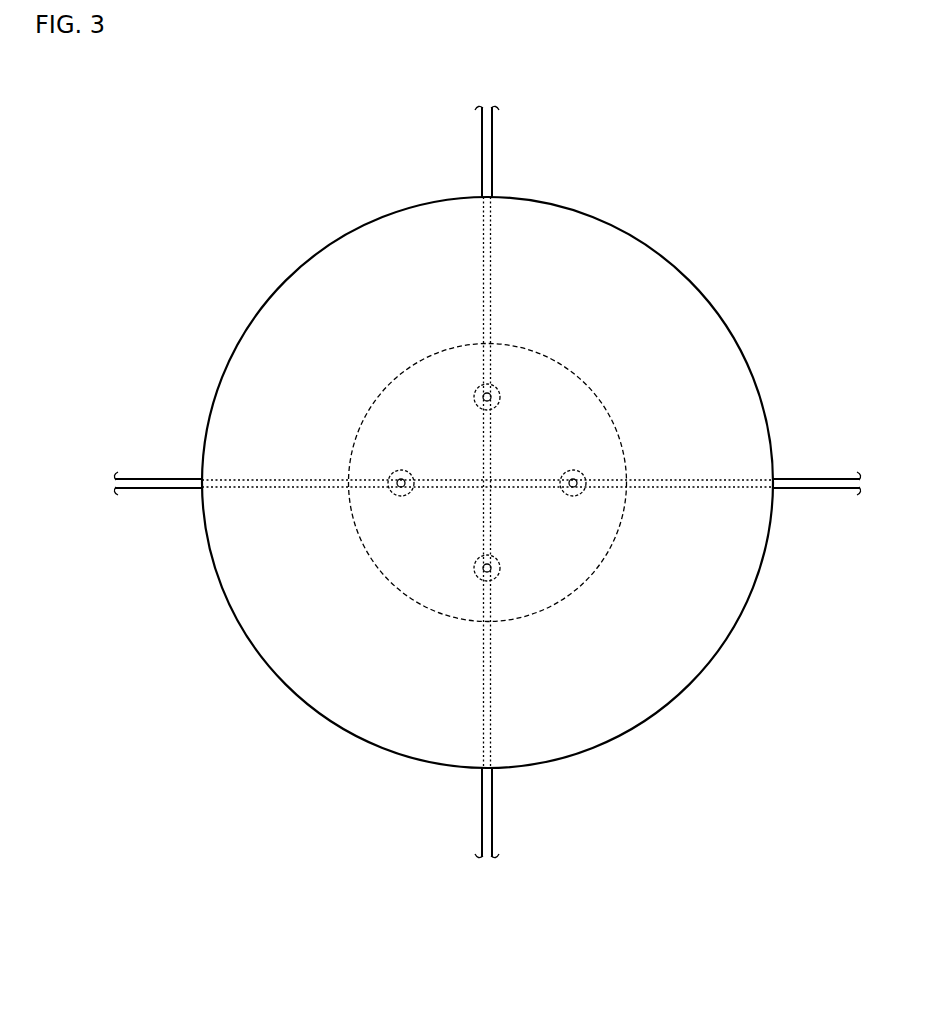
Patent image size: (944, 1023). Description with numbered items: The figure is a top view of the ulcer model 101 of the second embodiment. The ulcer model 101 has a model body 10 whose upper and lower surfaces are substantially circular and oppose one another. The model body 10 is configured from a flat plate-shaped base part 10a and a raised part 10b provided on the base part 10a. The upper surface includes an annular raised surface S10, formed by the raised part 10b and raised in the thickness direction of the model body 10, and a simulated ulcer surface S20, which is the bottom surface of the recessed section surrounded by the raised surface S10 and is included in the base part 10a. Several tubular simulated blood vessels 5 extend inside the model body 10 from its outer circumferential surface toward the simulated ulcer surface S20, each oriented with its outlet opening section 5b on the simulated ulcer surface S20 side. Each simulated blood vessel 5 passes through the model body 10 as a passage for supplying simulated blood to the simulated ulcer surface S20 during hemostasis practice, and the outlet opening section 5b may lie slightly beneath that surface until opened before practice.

The simulated blood vessel 5 is at (492, 152).
The outlet opening section 5b is at (473, 400).
The model body 10 is at (797, 630).
The base part 10a is at (558, 589).
The raised part 10b is at (677, 593).
The ulcer model 101 is at (707, 206).
The raised surface S10 is at (342, 649).
The simulated ulcer surface S20 is at (493, 504).